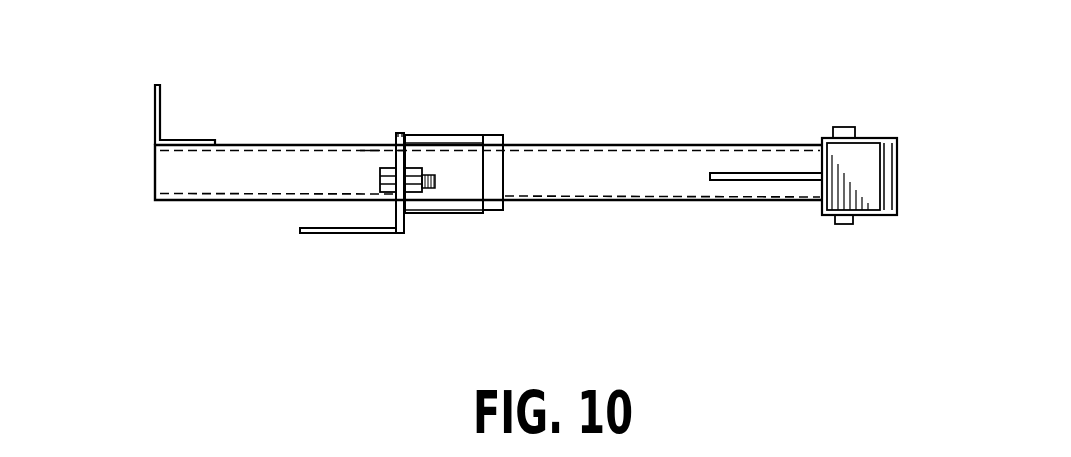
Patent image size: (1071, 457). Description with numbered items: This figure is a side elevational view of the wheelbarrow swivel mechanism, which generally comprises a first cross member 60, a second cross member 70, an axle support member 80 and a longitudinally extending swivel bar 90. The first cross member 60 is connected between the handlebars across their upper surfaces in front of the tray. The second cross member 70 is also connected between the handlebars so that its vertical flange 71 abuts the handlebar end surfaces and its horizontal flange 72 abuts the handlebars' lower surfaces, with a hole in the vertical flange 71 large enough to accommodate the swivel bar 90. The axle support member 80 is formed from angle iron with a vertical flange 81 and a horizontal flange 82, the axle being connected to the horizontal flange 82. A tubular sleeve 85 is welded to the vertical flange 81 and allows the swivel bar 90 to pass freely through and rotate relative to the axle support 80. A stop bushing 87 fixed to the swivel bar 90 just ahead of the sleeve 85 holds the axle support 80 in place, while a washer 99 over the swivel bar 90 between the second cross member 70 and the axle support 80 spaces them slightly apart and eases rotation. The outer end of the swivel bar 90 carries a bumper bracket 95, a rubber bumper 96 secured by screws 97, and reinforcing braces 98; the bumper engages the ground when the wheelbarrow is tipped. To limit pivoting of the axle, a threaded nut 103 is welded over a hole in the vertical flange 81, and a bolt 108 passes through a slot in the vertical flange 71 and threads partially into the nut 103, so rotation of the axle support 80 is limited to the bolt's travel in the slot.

The first cross member 60 is at (161, 108).
The second cross member 70 is at (402, 233).
The vertical flange 71 is at (372, 160).
The horizontal flange 72 is at (358, 237).
The axle support member 80 is at (405, 217).
The vertical flange 81 is at (412, 168).
The horizontal flange 82 is at (447, 213).
The tubular bushing or sleeve 85 is at (437, 157).
The stop bushing 87 is at (503, 137).
The swivel bar 90 is at (623, 182).
The bumper bracket 95 is at (822, 138).
The rubber bumper 96 is at (870, 200).
The screws 97 is at (851, 128).
The reinforcing braces 98 is at (752, 180).
The washer 99 is at (400, 135).
The threaded nut 103 is at (435, 180).
The bolt 108 is at (380, 175).